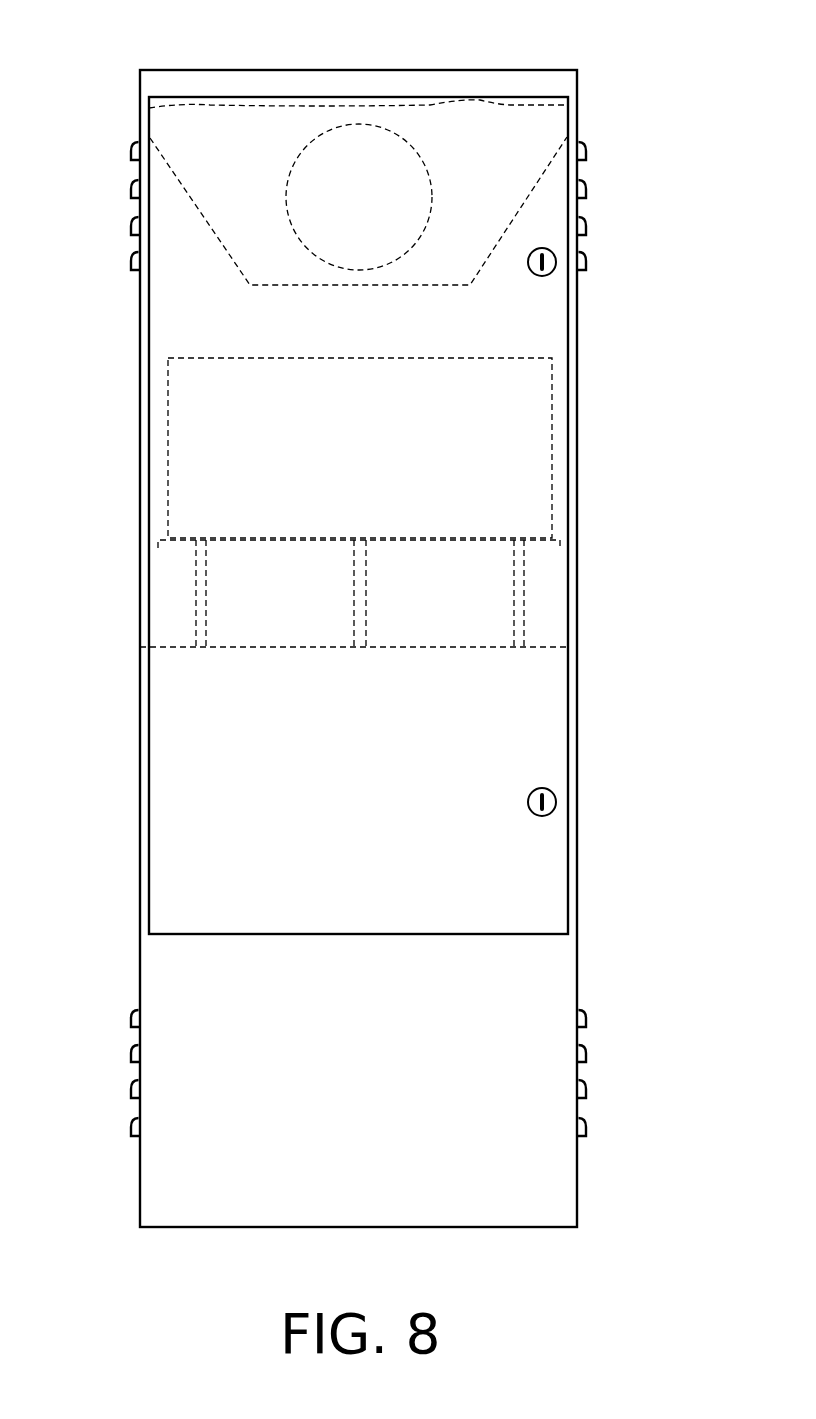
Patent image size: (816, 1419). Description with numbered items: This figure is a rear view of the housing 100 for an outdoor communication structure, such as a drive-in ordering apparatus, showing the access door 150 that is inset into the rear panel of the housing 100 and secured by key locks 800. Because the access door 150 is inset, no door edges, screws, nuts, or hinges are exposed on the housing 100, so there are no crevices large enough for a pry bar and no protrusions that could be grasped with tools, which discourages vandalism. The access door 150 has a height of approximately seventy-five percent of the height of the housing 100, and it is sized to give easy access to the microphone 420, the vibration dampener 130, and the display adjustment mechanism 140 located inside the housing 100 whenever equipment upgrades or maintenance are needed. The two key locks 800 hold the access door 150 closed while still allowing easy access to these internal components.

The housing 100 is at (285, 40).
The vibration dampener 130 is at (430, 285).
The display adjustment mechanism 140 is at (446, 672).
The access door 150 is at (203, 938).
The microphone 420 is at (360, 268).
The key locks 800 is at (552, 270).